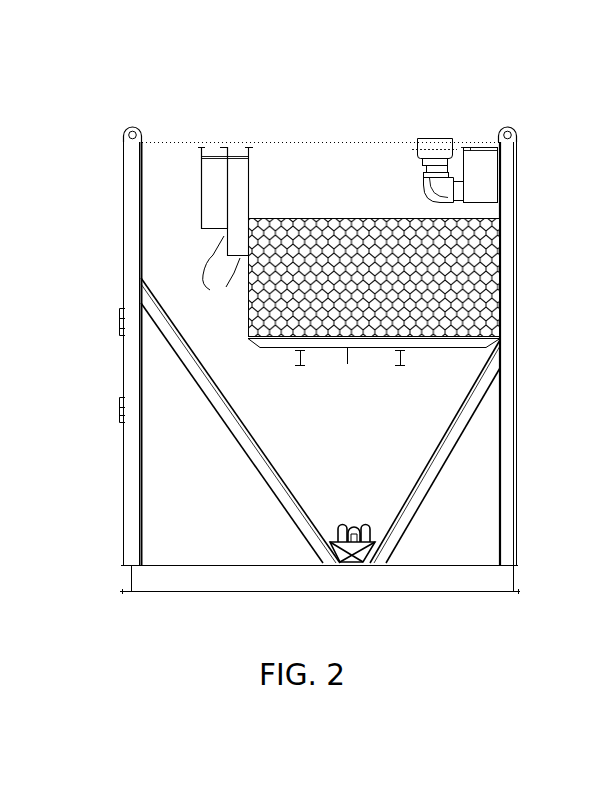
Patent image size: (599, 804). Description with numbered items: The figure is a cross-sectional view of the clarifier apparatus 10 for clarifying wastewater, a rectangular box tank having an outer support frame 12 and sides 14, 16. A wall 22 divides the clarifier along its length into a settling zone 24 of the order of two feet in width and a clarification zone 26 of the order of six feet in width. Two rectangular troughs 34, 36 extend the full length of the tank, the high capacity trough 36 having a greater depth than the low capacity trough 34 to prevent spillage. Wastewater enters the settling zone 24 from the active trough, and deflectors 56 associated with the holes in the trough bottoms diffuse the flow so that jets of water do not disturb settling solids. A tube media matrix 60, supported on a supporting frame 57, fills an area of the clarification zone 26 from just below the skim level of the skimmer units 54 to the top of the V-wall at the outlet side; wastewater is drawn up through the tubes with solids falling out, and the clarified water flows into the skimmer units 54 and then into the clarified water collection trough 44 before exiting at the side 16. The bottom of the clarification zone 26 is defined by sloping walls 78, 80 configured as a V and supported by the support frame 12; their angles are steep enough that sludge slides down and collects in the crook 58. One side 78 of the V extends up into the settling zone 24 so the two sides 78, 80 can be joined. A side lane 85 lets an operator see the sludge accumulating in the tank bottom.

The filtration apparatus 10 is at (298, 78).
The outer support frame 12 is at (132, 478).
The side 14 is at (123, 247).
The side 16 is at (517, 347).
The wall 22 is at (250, 292).
The settling zone 24 is at (191, 264).
The clarification zone 26 is at (340, 398).
The trough 34 is at (218, 178).
The trough 36 is at (236, 215).
The clarified water collection trough 44 is at (477, 174).
The skimmer unit 54 is at (430, 118).
The deflector 56 is at (210, 255).
The supporting frame 57 is at (365, 348).
The crook of the V-form floor 58 is at (332, 494).
The tube media matrix 60 is at (468, 300).
The sloping wall 78 is at (256, 437).
The sloping wall 80 is at (437, 443).
The side lane 85 is at (172, 118).